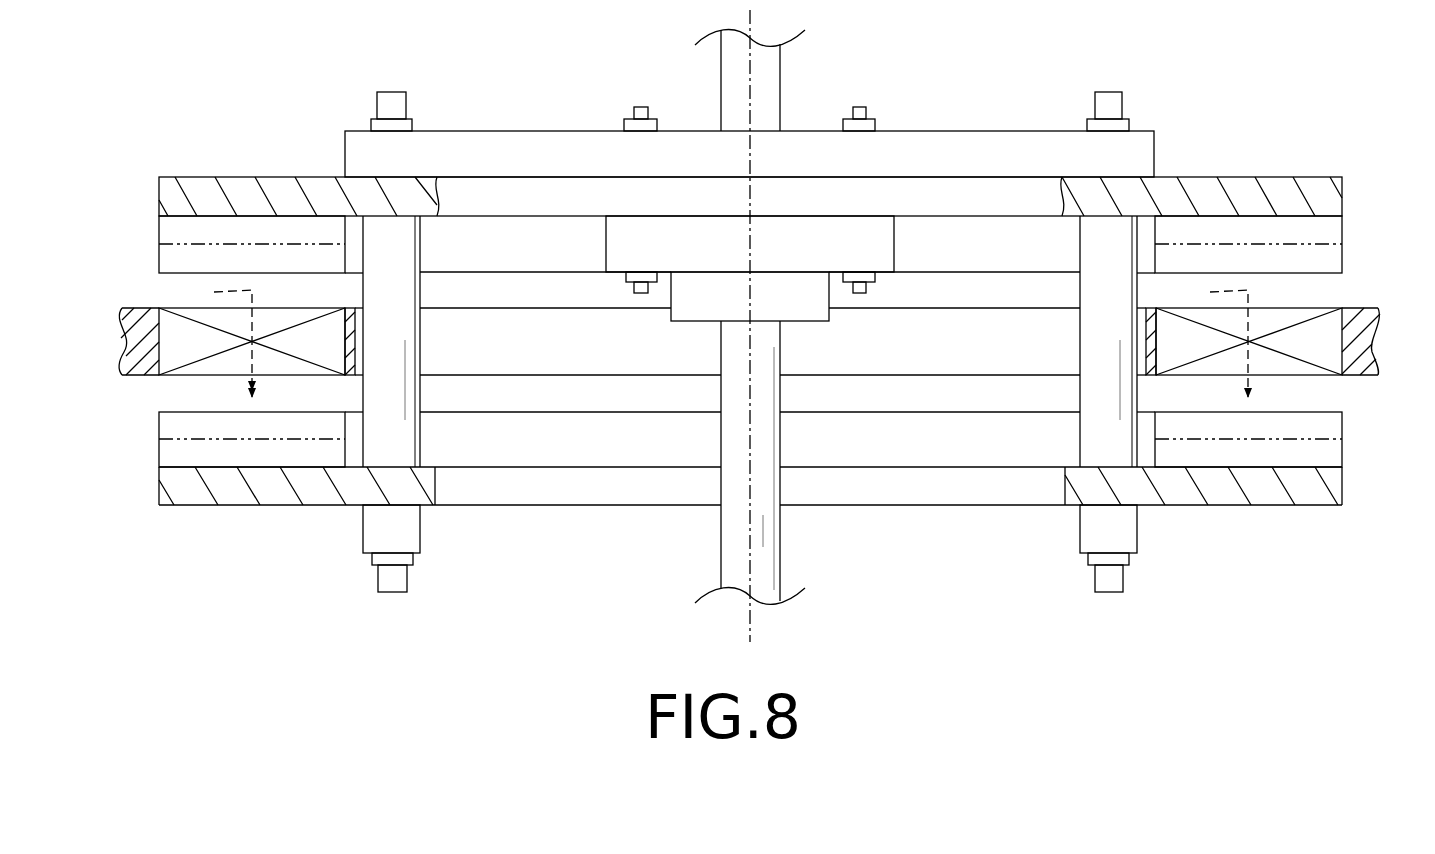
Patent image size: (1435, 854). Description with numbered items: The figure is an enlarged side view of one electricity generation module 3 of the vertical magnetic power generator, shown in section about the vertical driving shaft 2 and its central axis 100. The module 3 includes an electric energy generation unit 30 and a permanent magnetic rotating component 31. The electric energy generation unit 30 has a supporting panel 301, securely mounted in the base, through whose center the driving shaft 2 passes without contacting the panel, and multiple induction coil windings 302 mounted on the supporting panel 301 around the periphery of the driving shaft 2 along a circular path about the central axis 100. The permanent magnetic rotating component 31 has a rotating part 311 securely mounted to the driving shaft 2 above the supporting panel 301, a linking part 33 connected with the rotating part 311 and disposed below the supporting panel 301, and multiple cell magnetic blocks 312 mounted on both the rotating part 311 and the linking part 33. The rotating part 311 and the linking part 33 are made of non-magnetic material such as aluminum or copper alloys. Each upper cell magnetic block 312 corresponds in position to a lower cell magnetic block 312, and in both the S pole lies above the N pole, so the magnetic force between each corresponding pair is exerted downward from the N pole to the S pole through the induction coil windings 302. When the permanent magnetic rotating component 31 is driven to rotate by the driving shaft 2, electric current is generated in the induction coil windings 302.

The driving shaft 2 is at (783, 82).
The central axis 100 is at (750, 68).
The electricity generation module 3 is at (1150, 104).
The permanent magnetic rotating component 31 is at (732, 140).
The rotating part 311 is at (330, 177).
The cell magnetic block 312 is at (157, 250).
The electric energy generation unit 30 is at (743, 345).
The supporting panel 301 is at (142, 335).
The induction coil winding 302 is at (172, 383).
The linking part 33 is at (200, 508).